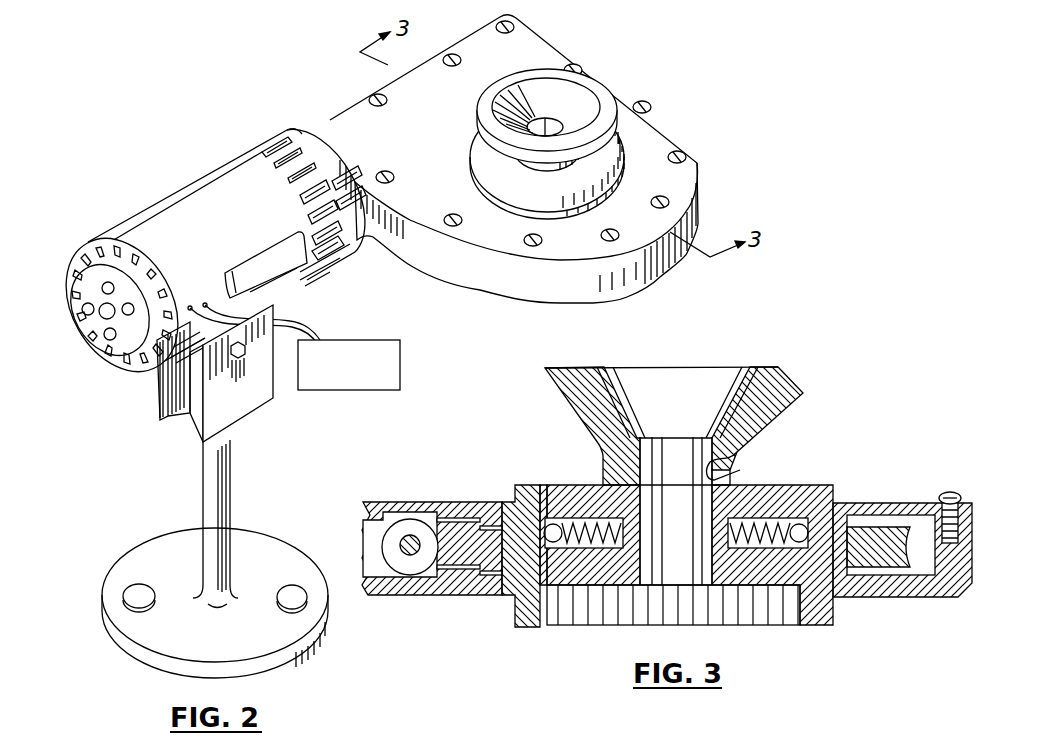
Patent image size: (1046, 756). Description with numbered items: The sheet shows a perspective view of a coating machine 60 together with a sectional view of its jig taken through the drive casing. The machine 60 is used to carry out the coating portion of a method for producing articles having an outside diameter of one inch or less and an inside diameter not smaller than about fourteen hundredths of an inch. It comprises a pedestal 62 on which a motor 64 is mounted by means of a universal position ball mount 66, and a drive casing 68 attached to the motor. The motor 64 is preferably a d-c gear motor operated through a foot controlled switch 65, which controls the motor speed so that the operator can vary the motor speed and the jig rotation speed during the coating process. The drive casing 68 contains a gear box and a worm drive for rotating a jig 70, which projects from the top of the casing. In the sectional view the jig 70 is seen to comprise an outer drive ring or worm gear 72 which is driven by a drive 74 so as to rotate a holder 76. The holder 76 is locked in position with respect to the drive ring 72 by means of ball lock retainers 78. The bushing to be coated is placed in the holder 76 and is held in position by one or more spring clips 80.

In FIG. 2, the machine 60 is at (421, 310).
In FIG. 2, the pedestal 62 is at (232, 466).
In FIG. 2, the motor 64 is at (128, 368).
In FIG. 2, the foot controlled switch 65 is at (367, 337).
In FIG. 2, the universal position ball mount 66 is at (181, 418).
In FIG. 2, the drive casing 68 is at (343, 117).
In FIG. 2, the jig 70 is at (597, 90).
In FIG. 3, the jig 70 is at (818, 403).
In FIG. 3, the outer drive ring 72 is at (495, 553).
In FIG. 3, the drive 74 is at (412, 572).
In FIG. 3, the holder 76 is at (598, 375).
In FIG. 3, the ball lock retainers 78 is at (577, 523).
In FIG. 3, the spring clips 80 is at (740, 468).